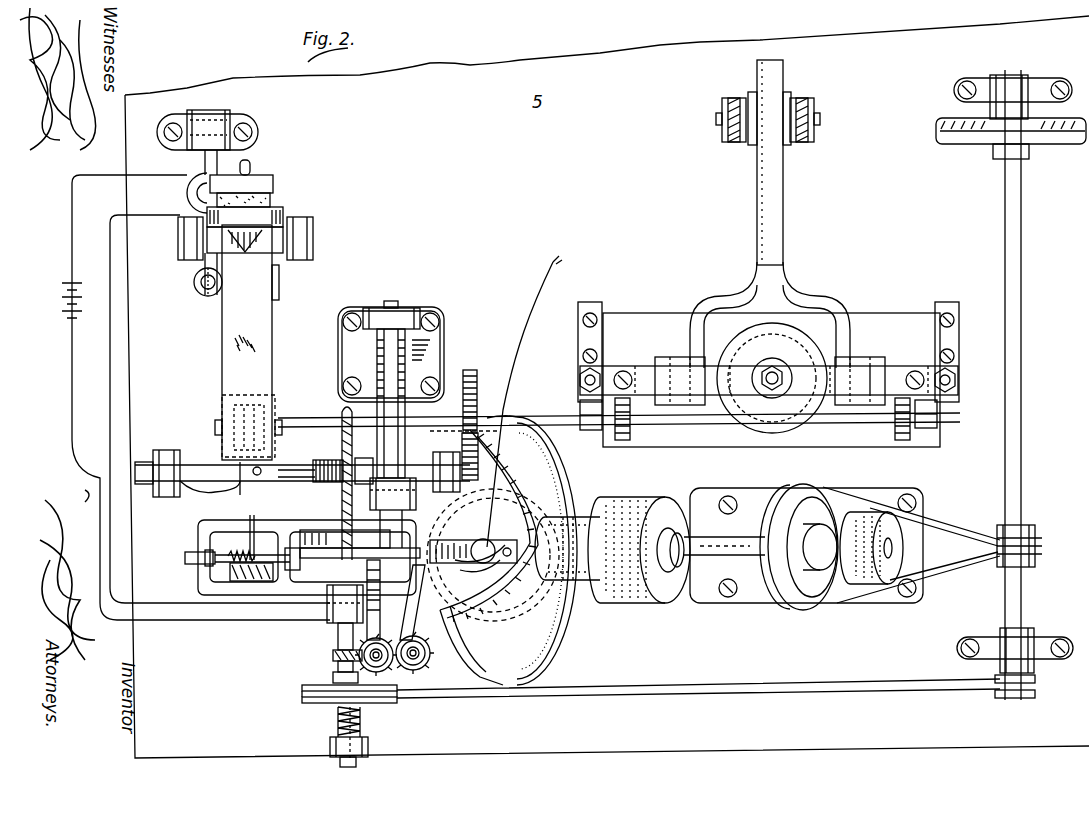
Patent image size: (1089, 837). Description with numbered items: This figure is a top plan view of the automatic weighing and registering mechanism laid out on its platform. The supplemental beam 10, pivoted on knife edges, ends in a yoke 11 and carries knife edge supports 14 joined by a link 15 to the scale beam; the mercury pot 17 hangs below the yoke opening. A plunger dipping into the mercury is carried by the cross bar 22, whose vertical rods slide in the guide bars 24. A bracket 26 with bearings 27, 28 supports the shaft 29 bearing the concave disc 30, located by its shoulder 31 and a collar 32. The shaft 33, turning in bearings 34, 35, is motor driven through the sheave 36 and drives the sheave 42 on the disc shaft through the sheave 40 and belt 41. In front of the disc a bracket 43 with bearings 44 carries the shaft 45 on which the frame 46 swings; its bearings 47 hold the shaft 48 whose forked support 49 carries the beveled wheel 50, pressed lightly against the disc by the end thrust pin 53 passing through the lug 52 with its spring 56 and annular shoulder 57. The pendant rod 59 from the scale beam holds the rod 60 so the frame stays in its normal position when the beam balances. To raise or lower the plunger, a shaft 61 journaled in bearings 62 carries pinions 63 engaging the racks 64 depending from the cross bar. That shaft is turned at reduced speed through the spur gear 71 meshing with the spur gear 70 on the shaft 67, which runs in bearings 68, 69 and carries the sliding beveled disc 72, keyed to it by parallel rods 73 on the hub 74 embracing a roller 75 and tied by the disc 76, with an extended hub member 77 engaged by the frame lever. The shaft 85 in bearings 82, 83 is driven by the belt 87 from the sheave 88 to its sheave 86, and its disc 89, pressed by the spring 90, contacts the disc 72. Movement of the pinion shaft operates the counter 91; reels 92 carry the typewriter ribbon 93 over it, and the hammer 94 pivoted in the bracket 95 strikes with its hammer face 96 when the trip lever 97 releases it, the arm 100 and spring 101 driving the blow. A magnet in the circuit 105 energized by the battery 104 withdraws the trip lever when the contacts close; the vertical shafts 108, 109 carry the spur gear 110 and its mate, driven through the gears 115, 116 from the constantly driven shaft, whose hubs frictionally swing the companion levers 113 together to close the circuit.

The supplemental beam 10 is at (783, 210).
The yoke 11 is at (845, 300).
The knife edge supports 14 is at (716, 119).
The link 15 is at (733, 98).
The pot or tube 17 is at (772, 360).
The cross bar 22 is at (893, 366).
The guide bar 24 is at (578, 345).
The bracket 26 is at (758, 603).
The bearing 27 is at (632, 603).
The bearing 28 is at (886, 580).
The shaft 29 is at (726, 558).
The concave disc 30 is at (508, 550).
The shoulder 31 is at (590, 517).
The collar 32 is at (688, 532).
The shaft 33 is at (1021, 318).
The bearing 34 is at (1028, 76).
The bearing 35 is at (1034, 636).
The sheave 36 is at (1062, 144).
The sheave 40 is at (1036, 535).
The belt 41 is at (952, 524).
The sheave 42 is at (822, 492).
The bracket 43 is at (342, 345).
The bearings 44 is at (410, 308).
The shaft 45 is at (391, 366).
The frame 46 is at (198, 526).
The shaft bearings 47 is at (440, 540).
The shaft 48 is at (300, 560).
The forked support 49 is at (416, 590).
The disc or wheel 50 is at (490, 604).
The lug 52 is at (205, 566).
The end thrust pin 53 is at (185, 556).
The spring 56 is at (235, 566).
The annular shoulder 57 is at (238, 540).
The pendant rod 59 is at (555, 258).
The rod 60 is at (524, 300).
The shaft 61 is at (715, 428).
The bearings 62 is at (588, 430).
The pinion 63 is at (625, 440).
The racks 64 is at (630, 410).
The shaft 67 is at (190, 465).
The bearing 68 is at (160, 450).
The bearing 69 is at (436, 452).
The spur gear 70 is at (478, 458).
The spur gear 71 is at (472, 370).
The disc 72 is at (342, 412).
The parallel rods 73 is at (292, 468).
The hub 74 is at (330, 460).
The roller 75 is at (255, 476).
The disc 76 is at (225, 496).
The extended hub member 77 is at (362, 458).
The bearing 82 is at (368, 742).
The bearing 83 is at (327, 600).
The shaft 85 is at (342, 764).
The sheave 86 is at (304, 703).
The belt 87 is at (664, 685).
The sheave 88 is at (1035, 679).
The disc 89 is at (325, 530).
The spring 90 is at (360, 716).
The counter 91 is at (222, 402).
The reels 92 is at (279, 280).
The typewriter ribbon 93 is at (247, 342).
The hammer 94 is at (273, 183).
The bracket 95 is at (313, 236).
The hammer face 96 is at (270, 201).
The trip lever 97 is at (205, 162).
The arm 100 is at (194, 274).
The spring 101 is at (196, 290).
The battery 104 is at (72, 283).
The circuit 105 is at (72, 432).
The vertical shaft 108 is at (430, 655).
The vertical shaft 109 is at (384, 648).
The spur gear 110 is at (425, 665).
The companion levers 113 is at (444, 618).
The gear 115 is at (395, 665).
The gear 116 is at (333, 658).